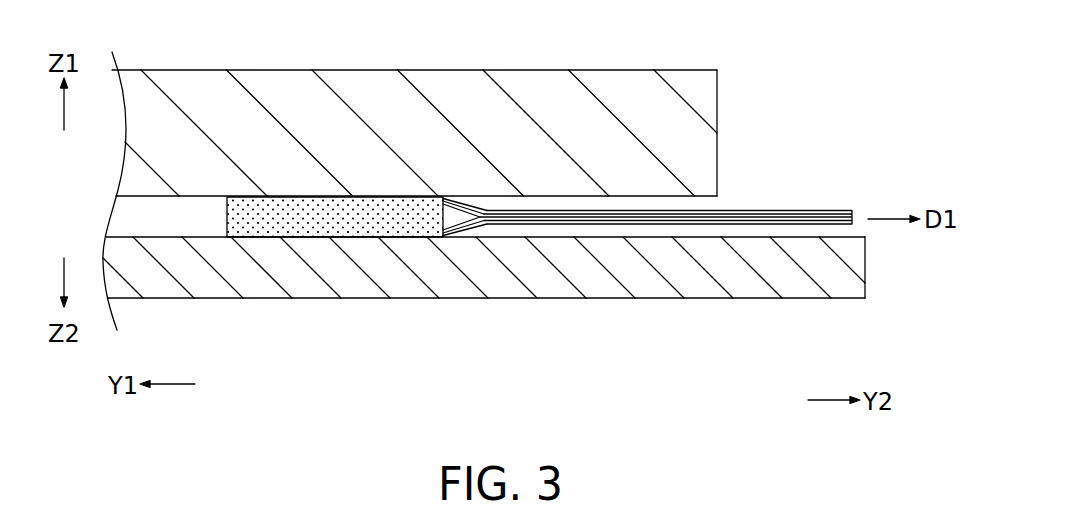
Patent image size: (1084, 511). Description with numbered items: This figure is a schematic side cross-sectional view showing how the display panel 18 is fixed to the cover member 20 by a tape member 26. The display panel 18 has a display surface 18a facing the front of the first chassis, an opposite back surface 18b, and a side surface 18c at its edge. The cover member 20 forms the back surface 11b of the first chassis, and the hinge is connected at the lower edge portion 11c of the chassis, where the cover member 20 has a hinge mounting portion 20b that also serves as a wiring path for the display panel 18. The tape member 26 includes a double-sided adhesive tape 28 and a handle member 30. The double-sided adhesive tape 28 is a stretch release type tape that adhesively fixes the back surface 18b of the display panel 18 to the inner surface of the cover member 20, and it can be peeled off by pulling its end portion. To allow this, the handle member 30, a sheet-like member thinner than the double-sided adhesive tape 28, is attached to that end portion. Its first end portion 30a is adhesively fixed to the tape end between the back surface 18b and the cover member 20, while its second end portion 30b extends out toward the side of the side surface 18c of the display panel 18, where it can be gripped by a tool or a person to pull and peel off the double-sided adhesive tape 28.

The display panel 18 is at (465, 102).
The display surface 18a is at (215, 70).
The back surface 18b is at (694, 197).
The side surface 18c is at (718, 86).
The cover member 20 is at (527, 290).
The hinge mounting portion 20b is at (773, 210).
The back surface 11b is at (200, 300).
The lower edge portion 11c is at (867, 268).
The tape member 26 is at (539, 220).
The double-sided adhesive tape 28 is at (414, 222).
The handle member 30 is at (625, 193).
The first end portion 30a is at (463, 199).
The second end portion 30b is at (774, 210).